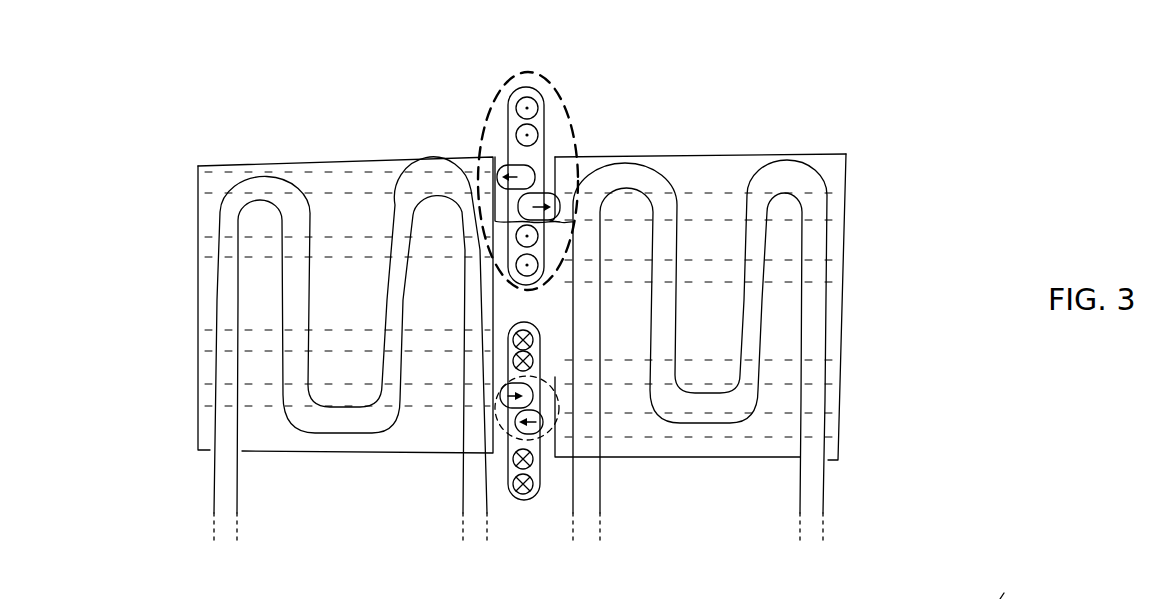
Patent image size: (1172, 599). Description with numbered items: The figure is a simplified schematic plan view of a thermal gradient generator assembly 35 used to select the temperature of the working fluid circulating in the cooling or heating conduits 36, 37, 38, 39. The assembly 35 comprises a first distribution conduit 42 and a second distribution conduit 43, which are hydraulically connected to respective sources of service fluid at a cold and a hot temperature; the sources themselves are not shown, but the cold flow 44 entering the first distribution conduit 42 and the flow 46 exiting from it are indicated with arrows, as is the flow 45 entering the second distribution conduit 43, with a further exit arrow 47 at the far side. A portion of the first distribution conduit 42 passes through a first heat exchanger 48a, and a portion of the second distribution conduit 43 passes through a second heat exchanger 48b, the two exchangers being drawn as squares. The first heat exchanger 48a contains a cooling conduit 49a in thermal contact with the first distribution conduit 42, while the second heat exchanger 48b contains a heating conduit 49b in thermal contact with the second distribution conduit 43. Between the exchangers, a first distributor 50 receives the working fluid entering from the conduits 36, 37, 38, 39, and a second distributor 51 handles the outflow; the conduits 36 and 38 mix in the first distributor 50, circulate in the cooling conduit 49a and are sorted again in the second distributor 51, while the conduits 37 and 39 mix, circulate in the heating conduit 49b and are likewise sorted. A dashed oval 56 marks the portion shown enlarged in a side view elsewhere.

The thermal gradient generator assembly 35 is at (896, 237).
The cooling or heating conduit 36 is at (540, 263).
The cooling or heating conduit 37 is at (537, 240).
The cooling or heating conduit 38 is at (538, 134).
The cooling or heating conduit 39 is at (537, 103).
The first distribution conduit 42 is at (222, 293).
The second distribution conduit 43 is at (820, 182).
The flow entering from the cold source 44 is at (225, 547).
The flow entering to the second distribution conduit 45 is at (584, 547).
The flow exiting from the distribution conduit 46 is at (474, 562).
The outlet port 47 is at (810, 560).
The first heat exchanger 48a is at (247, 157).
The second heat exchanger 48b is at (715, 142).
The cooling conduit 49a is at (312, 175).
The heating conduit 49b is at (717, 437).
The first distributor 50 is at (1000, 598).
The second distributor 51 is at (511, 512).
The dashed oval 56 is at (518, 73).